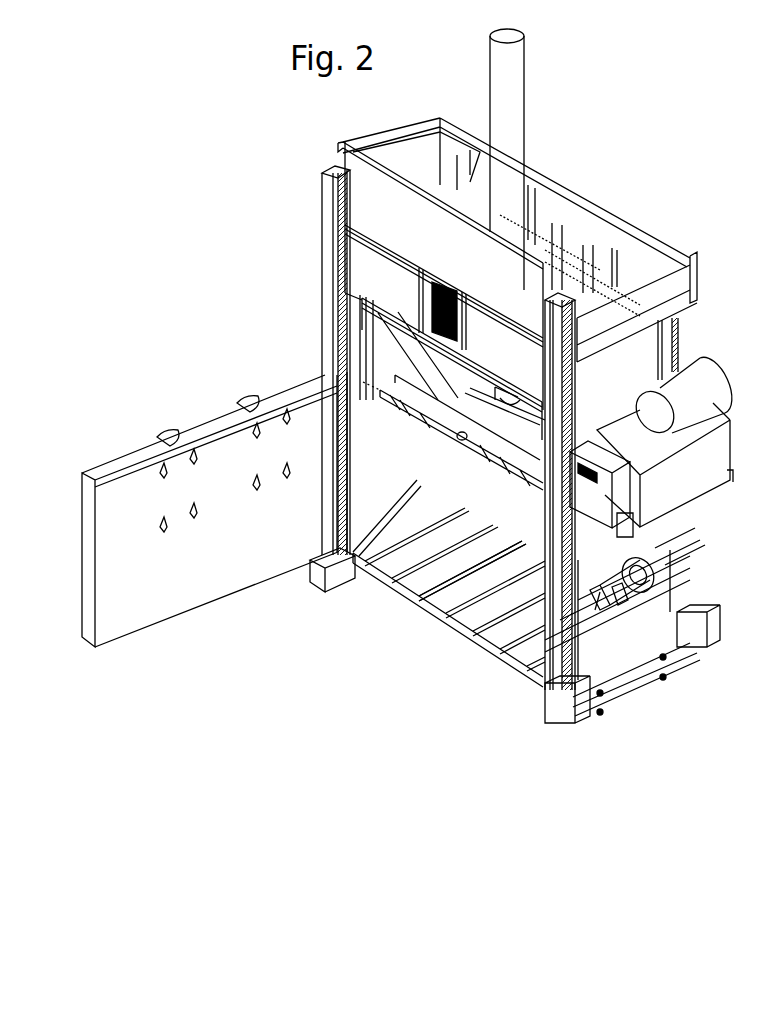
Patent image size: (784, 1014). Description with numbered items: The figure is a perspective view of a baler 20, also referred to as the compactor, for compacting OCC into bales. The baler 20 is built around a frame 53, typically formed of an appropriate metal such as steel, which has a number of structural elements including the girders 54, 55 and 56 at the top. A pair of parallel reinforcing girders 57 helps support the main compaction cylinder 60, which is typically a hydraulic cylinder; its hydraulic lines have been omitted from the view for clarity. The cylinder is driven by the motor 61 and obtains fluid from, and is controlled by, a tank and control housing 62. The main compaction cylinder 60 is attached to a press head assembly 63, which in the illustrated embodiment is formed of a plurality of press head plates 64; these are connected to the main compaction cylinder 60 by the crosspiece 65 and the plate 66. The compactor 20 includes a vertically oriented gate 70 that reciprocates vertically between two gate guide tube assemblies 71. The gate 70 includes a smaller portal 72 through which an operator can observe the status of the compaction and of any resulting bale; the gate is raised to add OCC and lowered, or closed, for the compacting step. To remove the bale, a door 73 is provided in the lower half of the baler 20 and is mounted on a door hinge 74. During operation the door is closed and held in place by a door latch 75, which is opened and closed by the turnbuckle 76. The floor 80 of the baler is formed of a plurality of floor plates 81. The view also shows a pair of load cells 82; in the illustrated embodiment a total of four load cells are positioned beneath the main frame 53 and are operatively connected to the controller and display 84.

The baler 20 is at (295, 150).
The frame 53 is at (642, 234).
The girder 54 is at (667, 302).
The girder 55 is at (630, 256).
The girder 56 is at (430, 171).
The reinforcing girders 57 is at (528, 205).
The main compaction cylinder 60 is at (512, 115).
The motor 61 is at (705, 405).
The tank and control housing 62 is at (688, 491).
The press head assembly 63 is at (395, 429).
The press head plates 64 is at (422, 432).
The crosspiece 65 is at (463, 391).
The plate 66 is at (501, 419).
The gate 70 is at (413, 235).
The gate guide tube assemblies 71 is at (323, 268).
The portal 72 is at (463, 311).
The door 73 is at (210, 560).
The door hinge 74 is at (347, 493).
The door latch 75 is at (553, 648).
The turnbuckle 76 is at (645, 570).
The floor 80 is at (392, 589).
The floor plates 81 is at (450, 596).
The load cells 82 is at (700, 652).
The controller and display 84 is at (600, 507).